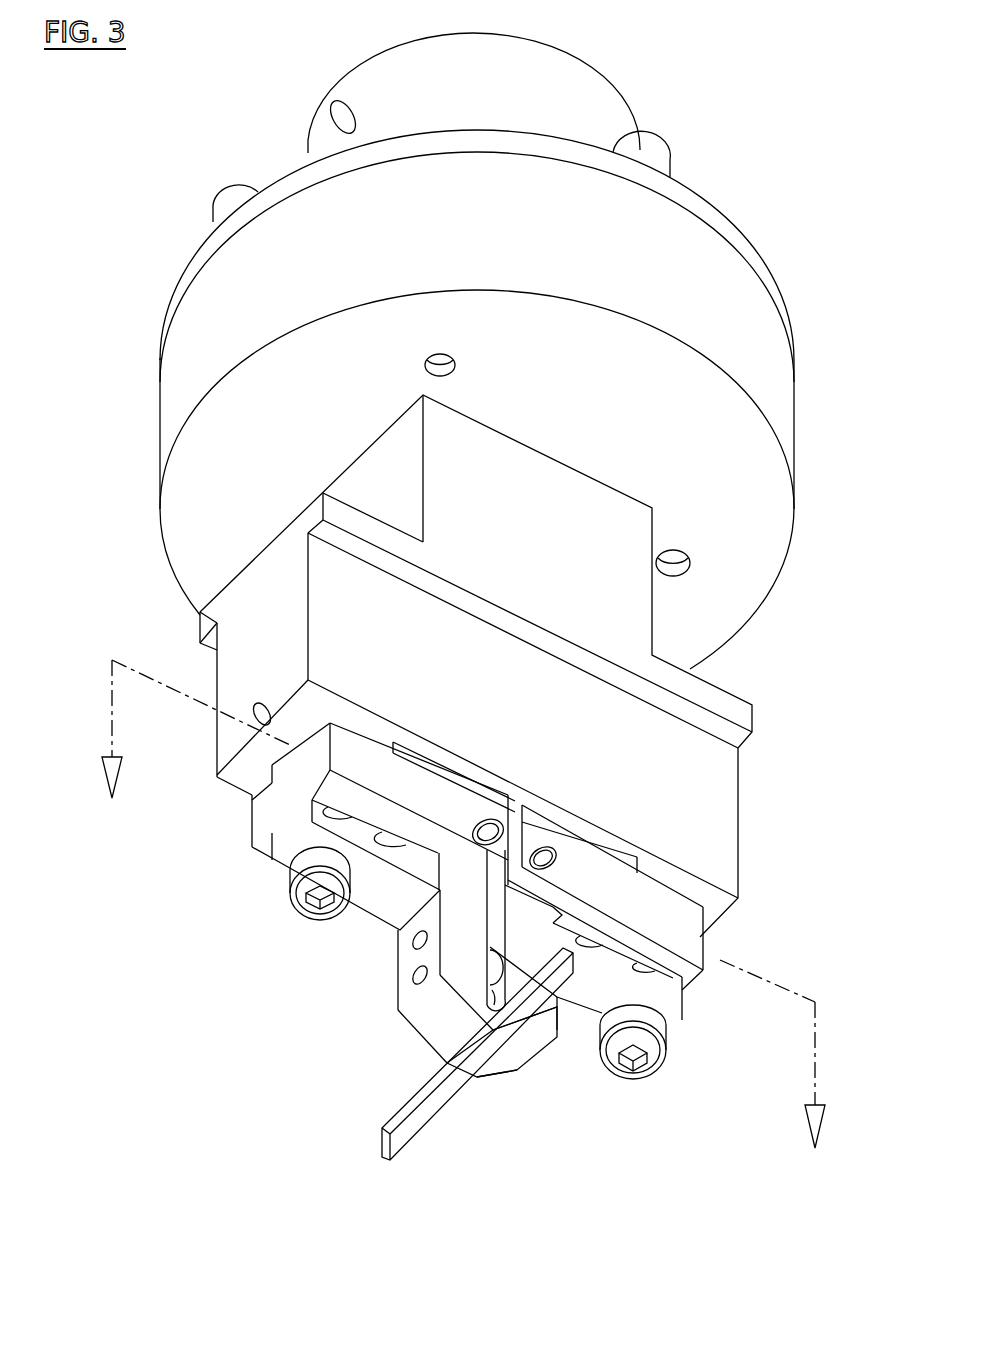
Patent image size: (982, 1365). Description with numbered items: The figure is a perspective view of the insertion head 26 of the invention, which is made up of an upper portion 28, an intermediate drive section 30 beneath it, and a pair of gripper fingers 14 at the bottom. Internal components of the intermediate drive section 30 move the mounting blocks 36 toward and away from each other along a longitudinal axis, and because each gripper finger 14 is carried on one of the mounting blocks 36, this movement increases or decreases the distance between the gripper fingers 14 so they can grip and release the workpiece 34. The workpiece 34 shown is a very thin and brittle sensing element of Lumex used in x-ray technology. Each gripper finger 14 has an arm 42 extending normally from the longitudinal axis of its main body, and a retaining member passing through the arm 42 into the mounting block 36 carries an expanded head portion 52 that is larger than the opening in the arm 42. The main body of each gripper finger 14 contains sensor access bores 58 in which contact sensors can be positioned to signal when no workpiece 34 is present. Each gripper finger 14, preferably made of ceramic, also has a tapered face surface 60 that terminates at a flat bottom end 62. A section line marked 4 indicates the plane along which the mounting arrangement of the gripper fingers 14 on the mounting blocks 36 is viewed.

The insertion head 26 is at (730, 190).
The upper portion 28 is at (735, 297).
The intermediate drive section 30 is at (675, 790).
The mounting blocks 36 is at (270, 802).
The expanded head portion 52 is at (290, 888).
The arm 42 is at (380, 903).
The gripper fingers 14 is at (395, 970).
The sensor access bores 58 is at (412, 988).
The tapered face surface 60 is at (438, 1020).
The bottom end 62 is at (468, 1045).
The workpiece 34 is at (405, 1150).
The section line 4- 4 is at (467, 881).